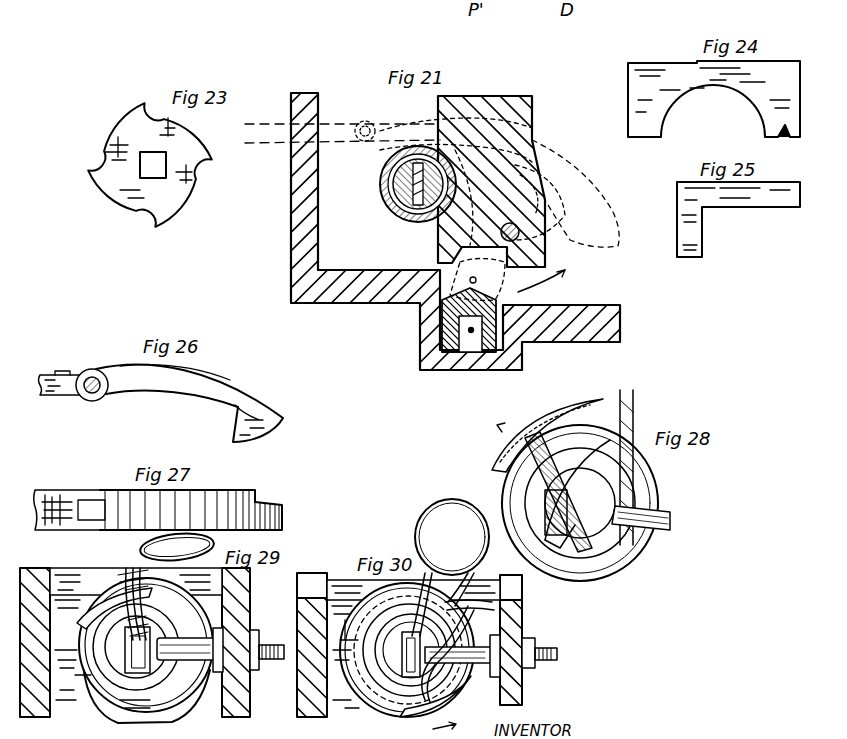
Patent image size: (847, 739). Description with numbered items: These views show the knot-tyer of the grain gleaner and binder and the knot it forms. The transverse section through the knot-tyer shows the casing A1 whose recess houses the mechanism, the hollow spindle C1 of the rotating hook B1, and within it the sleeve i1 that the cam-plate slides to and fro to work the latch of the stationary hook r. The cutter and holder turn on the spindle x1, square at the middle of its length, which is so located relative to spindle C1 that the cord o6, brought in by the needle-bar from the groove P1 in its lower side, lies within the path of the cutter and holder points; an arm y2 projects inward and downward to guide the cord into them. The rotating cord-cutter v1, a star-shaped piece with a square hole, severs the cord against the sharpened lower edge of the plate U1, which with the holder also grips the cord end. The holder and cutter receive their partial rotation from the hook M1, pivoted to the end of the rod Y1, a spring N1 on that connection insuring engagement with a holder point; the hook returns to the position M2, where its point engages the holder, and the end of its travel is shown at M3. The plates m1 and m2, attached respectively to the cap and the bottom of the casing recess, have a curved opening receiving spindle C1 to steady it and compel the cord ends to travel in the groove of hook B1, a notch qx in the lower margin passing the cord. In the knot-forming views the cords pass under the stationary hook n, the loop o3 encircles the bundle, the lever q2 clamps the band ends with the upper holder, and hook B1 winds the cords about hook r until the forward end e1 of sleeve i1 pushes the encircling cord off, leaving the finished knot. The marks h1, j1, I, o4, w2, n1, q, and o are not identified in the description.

In FIG. 23, the rotating cord-cutter v1 is at (150, 165).
In FIG. 21, the casing A1 is at (441, 231).
In FIG. 29, the casing A1 is at (35, 651).
In FIG. 30, the casing A1 is at (312, 656).
In FIG. 21, the rod Y1 is at (342, 144).
In FIG. 26, the rod Y1 is at (66, 397).
In FIG. 27, the rod Y1 is at (69, 522).
In FIG. 21, the end-of-travel position of hook M3 is at (472, 181).
In FIG. 21, the engaged position of hook M2 is at (579, 193).
In FIG. 21, the hollow spindle C1 is at (412, 182).
In FIG. 21, the sleeve i1 is at (394, 185).
In FIG. 21, the key h' h1 is at (419, 205).
In FIG. 21, the bearing j' j1 is at (370, 210).
In FIG. 21, the arm y2 is at (416, 256).
In FIG. 21, the lever I is at (477, 280).
In FIG. 21, the cord o6 is at (485, 286).
In FIG. 21, the plate U1 is at (541, 281).
In FIG. 21, the groove P1 is at (469, 339).
In FIG. 21, the pin o4 is at (484, 366).
In FIG. 28, the pin o4 is at (556, 480).
In FIG. 21, the spindle x1 is at (516, 233).
In FIG. 21, the cam w'' w2 is at (537, 195).
In FIG. 24, the plate m1 is at (714, 99).
In FIG. 25, the plate m1 is at (738, 219).
In FIG. 29, the plate m1 is at (136, 586).
In FIG. 30, the plate m1 is at (413, 601).
In FIG. 24, the notch qx is at (785, 140).
In FIG. 26, the spring N1 is at (94, 371).
In FIG. 26, the hook M1 is at (196, 403).
In FIG. 27, the hook M1 is at (191, 510).
In FIG. 29, the rotating hook B1 is at (109, 608).
In FIG. 30, the rotating hook B1 is at (409, 663).
In FIG. 28, the rotating hook B1 is at (535, 435).
In FIG. 29, the plate m2 is at (134, 650).
In FIG. 30, the plate m2 is at (403, 654).
In FIG. 29, the ring n' n1 is at (136, 647).
In FIG. 30, the ring n' n1 is at (409, 650).
In FIG. 29, the forward end of sleeve e1 is at (136, 647).
In FIG. 30, the forward end of sleeve e1 is at (411, 650).
In FIG. 29, the stationary hook r is at (137, 650).
In FIG. 30, the stationary hook r is at (411, 654).
In FIG. 28, the stationary hook r is at (548, 520).
In FIG. 29, the stationary hook n is at (190, 650).
In FIG. 30, the stationary hook n is at (462, 656).
In FIG. 28, the stationary hook n is at (648, 518).
In FIG. 29, the nut q is at (267, 646).
In FIG. 30, the nut q is at (546, 653).
In FIG. 29, the loop o3 is at (166, 585).
In FIG. 28, the loop o3 is at (566, 503).
In FIG. 30, the lever q2 is at (453, 600).
In FIG. 28, the cord o is at (585, 460).